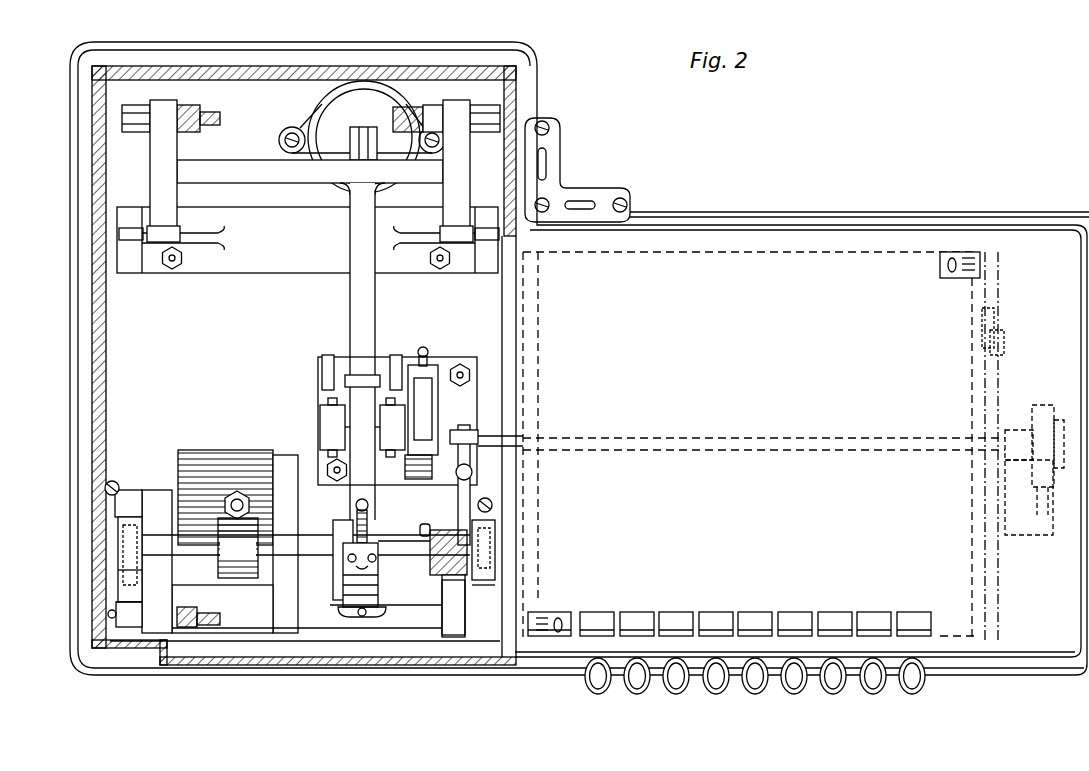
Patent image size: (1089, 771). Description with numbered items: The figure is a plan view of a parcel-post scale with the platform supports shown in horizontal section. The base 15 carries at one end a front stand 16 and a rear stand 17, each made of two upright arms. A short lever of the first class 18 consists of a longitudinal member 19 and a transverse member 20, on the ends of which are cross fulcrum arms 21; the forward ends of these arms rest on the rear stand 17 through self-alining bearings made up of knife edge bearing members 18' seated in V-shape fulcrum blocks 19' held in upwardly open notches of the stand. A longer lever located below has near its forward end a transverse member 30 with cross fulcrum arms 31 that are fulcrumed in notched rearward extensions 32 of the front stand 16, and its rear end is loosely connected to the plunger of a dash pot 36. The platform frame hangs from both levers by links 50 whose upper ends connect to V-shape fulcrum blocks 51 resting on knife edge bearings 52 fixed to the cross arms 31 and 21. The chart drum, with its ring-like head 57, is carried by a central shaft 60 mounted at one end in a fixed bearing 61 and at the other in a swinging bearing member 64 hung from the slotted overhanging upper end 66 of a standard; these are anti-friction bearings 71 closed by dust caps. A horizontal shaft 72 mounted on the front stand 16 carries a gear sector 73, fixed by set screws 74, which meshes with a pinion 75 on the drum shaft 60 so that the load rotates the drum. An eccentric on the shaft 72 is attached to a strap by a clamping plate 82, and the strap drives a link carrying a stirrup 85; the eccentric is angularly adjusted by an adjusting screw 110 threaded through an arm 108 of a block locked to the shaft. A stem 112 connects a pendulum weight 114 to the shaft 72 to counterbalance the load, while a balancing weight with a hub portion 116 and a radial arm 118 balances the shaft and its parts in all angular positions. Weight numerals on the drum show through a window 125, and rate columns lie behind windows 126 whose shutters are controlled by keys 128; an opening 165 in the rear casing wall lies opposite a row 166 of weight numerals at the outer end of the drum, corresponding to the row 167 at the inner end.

The base 15 is at (76, 313).
The front stand 16 is at (117, 575).
The rear stand 17 is at (128, 250).
The short lever 18 is at (308, 240).
The knife edge bearing members 18' is at (309, 251).
The longitudinal member 19 is at (342, 351).
The V-shape fulcrum blocks 19' is at (254, 271).
The transverse member 20 is at (310, 170).
The cross fulcrum arms 21 is at (168, 148).
The transverse member 30 is at (374, 606).
The cross fulcrum arms 31 is at (158, 607).
The rearward extensions 32 is at (108, 490).
The dash pot 36 is at (362, 108).
The links 50 is at (130, 640).
The V-shape fulcrum blocks 51 is at (122, 622).
The knife edge bearings 52 is at (110, 616).
The ring-like end member 57 is at (1000, 272).
The central shaft 60 is at (797, 437).
The fixed bearing 61 is at (1053, 403).
The bearing member 64 is at (418, 462).
The slotted overhanging upper end 66 is at (437, 424).
The anti-friction bearings 71 is at (115, 540).
The horizontal shaft 72 is at (262, 575).
The gear sector 73 is at (478, 486).
The set screws 74 is at (435, 575).
The pinion 75 is at (472, 428).
The clamping plate 82 is at (404, 562).
The stirrup 85 is at (348, 617).
The arm 108 is at (340, 522).
The adjusting screw 110 is at (370, 512).
The stem 112 is at (240, 503).
The pendulum weight 114 is at (205, 448).
The hub portion 116 is at (239, 548).
The radial arm 118 is at (325, 556).
The window 125 is at (568, 612).
The windows 126 is at (725, 600).
The keys 128 is at (790, 692).
The opening 165 is at (948, 280).
The row of weight numerals 166 is at (949, 268).
The row of weight numerals 167 is at (549, 612).